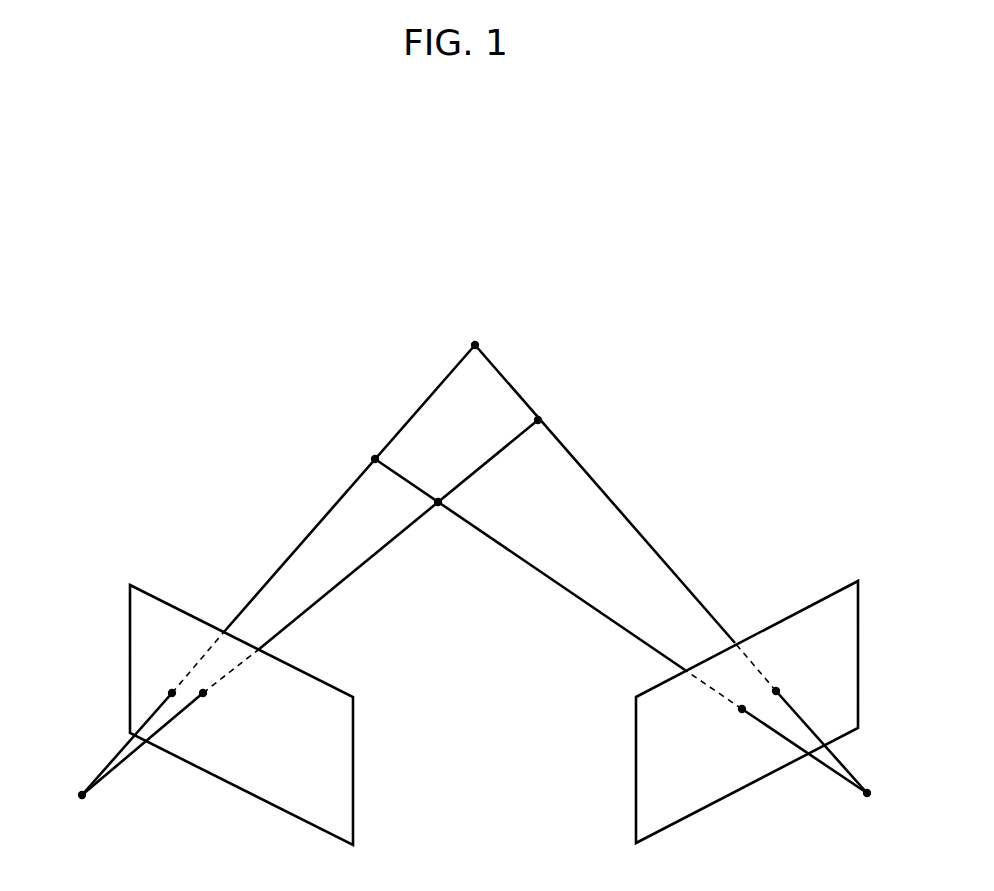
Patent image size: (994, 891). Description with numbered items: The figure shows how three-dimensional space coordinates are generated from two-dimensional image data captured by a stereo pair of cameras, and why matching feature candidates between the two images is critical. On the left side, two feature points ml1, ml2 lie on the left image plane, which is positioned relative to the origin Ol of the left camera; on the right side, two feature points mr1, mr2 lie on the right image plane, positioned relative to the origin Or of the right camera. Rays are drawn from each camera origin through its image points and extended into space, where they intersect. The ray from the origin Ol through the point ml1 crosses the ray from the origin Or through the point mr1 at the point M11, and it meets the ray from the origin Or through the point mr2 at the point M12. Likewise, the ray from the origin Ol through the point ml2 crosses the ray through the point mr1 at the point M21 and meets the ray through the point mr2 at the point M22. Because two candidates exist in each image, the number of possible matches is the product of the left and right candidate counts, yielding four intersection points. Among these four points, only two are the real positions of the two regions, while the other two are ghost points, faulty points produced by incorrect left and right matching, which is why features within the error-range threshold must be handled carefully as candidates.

The origin of left camera Ol is at (299, 585).
The origin of right camera Or is at (639, 581).
The point M12 on three-dimensional space M12 is at (487, 330).
The point M11 on three-dimensional space M11 is at (357, 448).
The point M22 on three-dimensional space M22 is at (559, 413).
The point M21 on three-dimensional space M21 is at (465, 503).
The point m_l^1 ml1 is at (159, 681).
The point m_l^2 ml2 is at (220, 711).
The point m_r^1 mr1 is at (729, 727).
The point m_r^2 mr2 is at (796, 683).